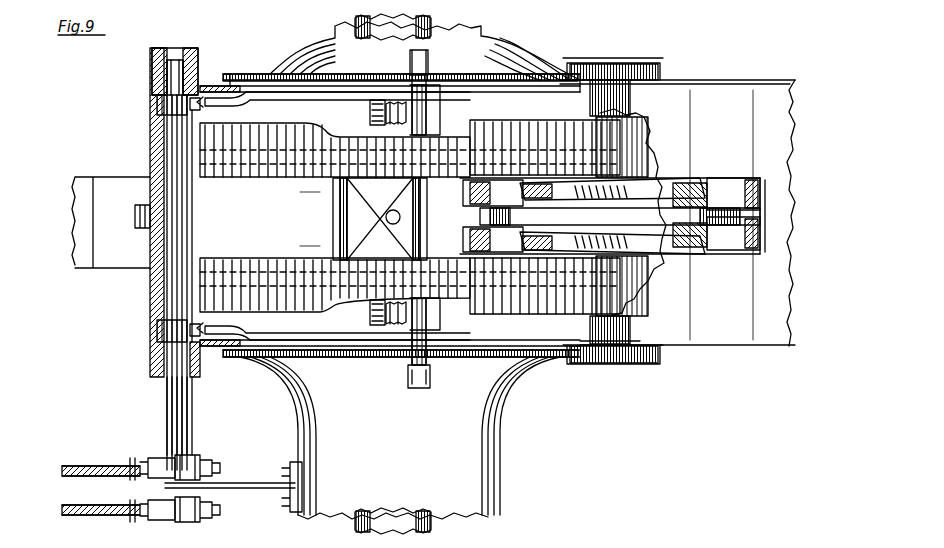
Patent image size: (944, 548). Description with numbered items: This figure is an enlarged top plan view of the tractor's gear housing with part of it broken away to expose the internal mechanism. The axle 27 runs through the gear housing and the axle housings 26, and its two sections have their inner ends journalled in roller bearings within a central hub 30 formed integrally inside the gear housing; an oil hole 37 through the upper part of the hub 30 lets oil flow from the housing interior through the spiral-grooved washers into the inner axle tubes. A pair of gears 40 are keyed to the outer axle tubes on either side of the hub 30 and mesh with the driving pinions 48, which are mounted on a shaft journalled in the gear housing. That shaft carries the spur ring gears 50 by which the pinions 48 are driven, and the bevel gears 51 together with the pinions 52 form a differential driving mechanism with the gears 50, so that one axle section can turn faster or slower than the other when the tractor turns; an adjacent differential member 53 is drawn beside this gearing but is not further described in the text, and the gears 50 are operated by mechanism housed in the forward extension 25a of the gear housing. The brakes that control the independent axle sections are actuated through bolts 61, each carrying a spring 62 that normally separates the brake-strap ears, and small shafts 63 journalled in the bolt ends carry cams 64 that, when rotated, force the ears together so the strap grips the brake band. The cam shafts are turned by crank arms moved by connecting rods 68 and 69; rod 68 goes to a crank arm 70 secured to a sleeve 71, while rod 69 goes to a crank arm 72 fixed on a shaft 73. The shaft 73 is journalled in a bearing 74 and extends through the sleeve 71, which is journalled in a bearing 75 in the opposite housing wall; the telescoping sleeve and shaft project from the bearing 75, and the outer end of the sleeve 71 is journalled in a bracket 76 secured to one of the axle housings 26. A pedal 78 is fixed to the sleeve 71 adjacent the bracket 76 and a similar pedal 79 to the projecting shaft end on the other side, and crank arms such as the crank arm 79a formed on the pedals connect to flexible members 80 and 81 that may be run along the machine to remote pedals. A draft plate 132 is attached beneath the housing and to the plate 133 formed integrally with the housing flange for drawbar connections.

The forward extension 25a is at (728, 342).
The axle housing 26 is at (296, 433).
The axle 27 is at (432, 27).
The central hub 30 is at (333, 200).
The oil hole 37 is at (386, 221).
The gears 40 is at (518, 115).
The driving pinions 48 is at (630, 135).
The spur ring gears 50 is at (775, 186).
The bevel gears 51 is at (650, 192).
The pinions 52 is at (712, 200).
The ring 53 is at (758, 232).
The bolts 61 is at (375, 320).
The spring 62 is at (398, 326).
The small shafts 63 is at (428, 380).
The cams 64 is at (426, 118).
The connecting rod 68 is at (280, 340).
The connecting rod 69 is at (285, 96).
The crank arm 70 is at (185, 322).
The sleeve 71 is at (182, 420).
The crank arm 72 is at (205, 98).
The shaft 73 is at (174, 165).
The bearing 74 is at (172, 73).
The bearing 75 is at (161, 212).
The bracket 76 is at (238, 490).
The pedal 78 is at (196, 462).
The pedal 79 is at (182, 514).
The crank arm 79a is at (146, 460).
The flexible member 80 is at (90, 466).
The flexible member 81 is at (92, 515).
The draft plate 132 is at (78, 177).
The plate 133 is at (122, 263).